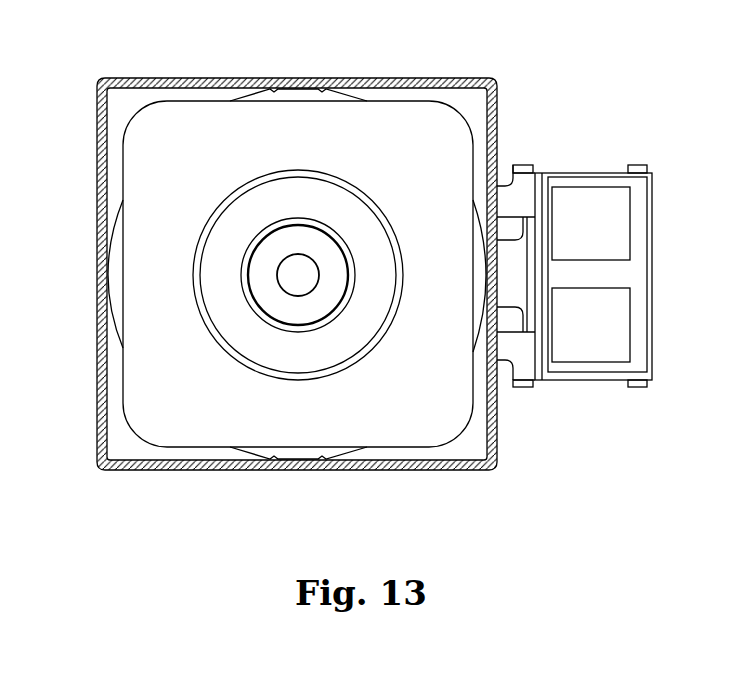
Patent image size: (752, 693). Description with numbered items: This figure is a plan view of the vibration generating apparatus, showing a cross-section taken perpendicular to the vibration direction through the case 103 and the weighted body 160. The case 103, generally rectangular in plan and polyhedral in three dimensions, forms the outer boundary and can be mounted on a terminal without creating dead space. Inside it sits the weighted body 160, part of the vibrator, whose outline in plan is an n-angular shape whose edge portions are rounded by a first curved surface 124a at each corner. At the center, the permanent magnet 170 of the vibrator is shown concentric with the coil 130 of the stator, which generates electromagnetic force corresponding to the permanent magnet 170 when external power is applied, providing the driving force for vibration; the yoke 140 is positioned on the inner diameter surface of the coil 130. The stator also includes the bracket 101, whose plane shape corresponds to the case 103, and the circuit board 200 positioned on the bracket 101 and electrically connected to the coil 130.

The case 103 is at (400, 78).
The first curved surface 124a is at (143, 112).
The weighted body 160 is at (427, 430).
The permanent magnet 170 is at (240, 337).
The coil 130 is at (245, 297).
The yoke 140 is at (285, 276).
The circuit board 200 is at (585, 338).
The bracket 101 is at (523, 387).